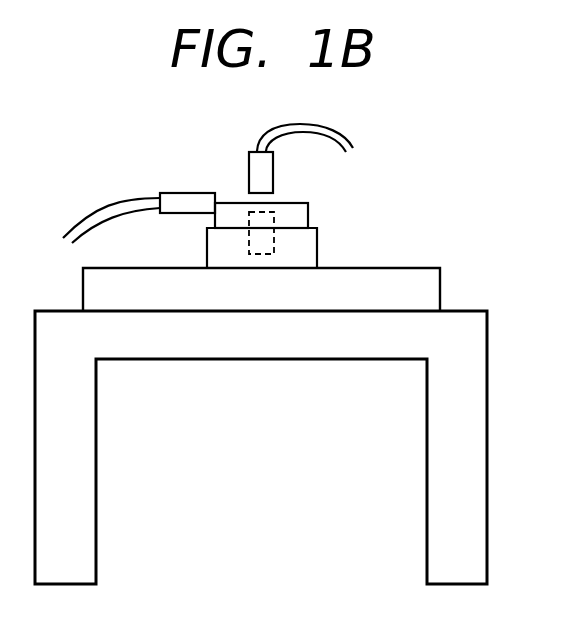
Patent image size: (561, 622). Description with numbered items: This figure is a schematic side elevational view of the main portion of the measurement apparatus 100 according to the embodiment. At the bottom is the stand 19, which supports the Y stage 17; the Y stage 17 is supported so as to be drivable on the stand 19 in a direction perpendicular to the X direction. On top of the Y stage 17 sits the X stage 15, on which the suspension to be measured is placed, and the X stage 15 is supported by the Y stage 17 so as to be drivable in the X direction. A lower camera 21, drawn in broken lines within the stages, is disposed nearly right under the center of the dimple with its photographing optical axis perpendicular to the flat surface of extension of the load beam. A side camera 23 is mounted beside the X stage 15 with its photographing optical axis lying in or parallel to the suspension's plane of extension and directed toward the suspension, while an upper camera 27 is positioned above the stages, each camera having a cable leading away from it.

The measurement apparatus 100 is at (455, 199).
The stand 19 is at (423, 287).
The Y stage 17 is at (302, 253).
The X stage 15 is at (295, 213).
The lower camera 21 is at (258, 238).
The side camera 23 is at (187, 200).
The upper camera 27 is at (262, 175).